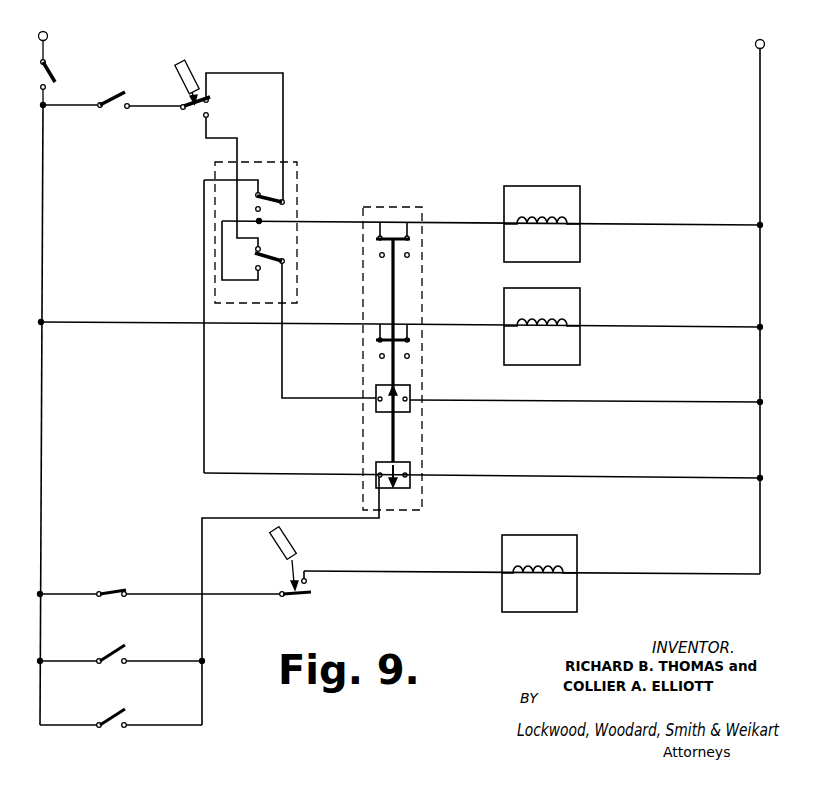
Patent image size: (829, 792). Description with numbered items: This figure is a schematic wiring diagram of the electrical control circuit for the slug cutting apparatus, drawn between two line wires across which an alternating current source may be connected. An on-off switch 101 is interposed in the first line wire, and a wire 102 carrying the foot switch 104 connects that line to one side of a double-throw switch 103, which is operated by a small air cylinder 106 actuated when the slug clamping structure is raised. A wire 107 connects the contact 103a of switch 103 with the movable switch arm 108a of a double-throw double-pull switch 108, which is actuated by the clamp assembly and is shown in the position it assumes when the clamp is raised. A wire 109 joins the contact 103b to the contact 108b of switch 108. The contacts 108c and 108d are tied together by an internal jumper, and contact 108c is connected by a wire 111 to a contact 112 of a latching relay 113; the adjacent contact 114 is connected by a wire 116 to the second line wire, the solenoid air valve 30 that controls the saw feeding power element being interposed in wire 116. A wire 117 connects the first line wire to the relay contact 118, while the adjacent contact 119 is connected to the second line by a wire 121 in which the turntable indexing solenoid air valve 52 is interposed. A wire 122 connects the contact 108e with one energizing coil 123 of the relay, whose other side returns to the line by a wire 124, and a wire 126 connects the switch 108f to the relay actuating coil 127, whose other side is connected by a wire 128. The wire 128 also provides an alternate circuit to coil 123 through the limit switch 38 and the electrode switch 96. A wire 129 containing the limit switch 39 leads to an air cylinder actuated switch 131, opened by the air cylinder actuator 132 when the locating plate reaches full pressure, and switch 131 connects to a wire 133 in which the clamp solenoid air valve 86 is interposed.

The on-off switch 101 is at (58, 70).
The wire 102 is at (150, 108).
The double-throw switch 103 is at (174, 94).
The contact 103a is at (208, 99).
The contact 103b is at (208, 115).
The foot switch 104 is at (110, 114).
The air cylinder 106 is at (179, 68).
The wire 107 is at (284, 93).
The double-throw double-pull switch 108 is at (307, 190).
The movable switch arm 108a is at (280, 198).
The contact 108b is at (260, 248).
The contact 108c is at (261, 209).
The contact 108d is at (260, 268).
The contact 108e is at (268, 172).
The switch 108f is at (262, 256).
The wire 109 is at (234, 147).
The wire 111 is at (346, 222).
The contact 112 is at (381, 236).
The latching relay 113 is at (434, 282).
The contact 114 is at (409, 237).
The wire 116 is at (640, 224).
The wire 117 is at (120, 321).
The contact 118 is at (378, 339).
The contact 119 is at (409, 339).
The wire 121 is at (636, 326).
The wire 122 is at (203, 368).
The energizing coil 123 is at (401, 462).
The wire 124 is at (603, 476).
The wire 126 is at (280, 357).
The relay actuating coil 127 is at (401, 385).
The wire 128 is at (609, 402).
The wire 129 is at (228, 595).
The air cylinder actuated switch 131 is at (322, 594).
The air cylinder actuator 132 is at (277, 547).
The wire 133 is at (412, 573).
The solenoid air valve 30 is at (530, 218).
The solenoid air valve 52 is at (522, 320).
The solenoid air valve 86 is at (526, 580).
The limit switch 39 is at (113, 580).
The limit switch 38 is at (110, 643).
The switch 96 is at (110, 707).